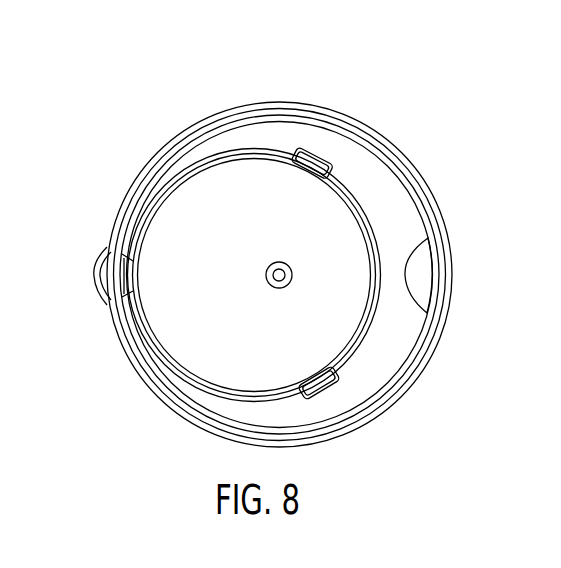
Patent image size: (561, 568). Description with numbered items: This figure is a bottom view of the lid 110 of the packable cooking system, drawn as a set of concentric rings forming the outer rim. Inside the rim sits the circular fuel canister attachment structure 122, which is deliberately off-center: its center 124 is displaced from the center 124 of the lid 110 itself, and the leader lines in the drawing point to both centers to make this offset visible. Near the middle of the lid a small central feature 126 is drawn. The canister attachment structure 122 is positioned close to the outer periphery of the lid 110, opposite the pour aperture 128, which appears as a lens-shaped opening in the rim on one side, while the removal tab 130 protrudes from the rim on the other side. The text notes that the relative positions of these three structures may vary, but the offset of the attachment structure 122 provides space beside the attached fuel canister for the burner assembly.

The lid 110 is at (442, 126).
The canister attachment structure 122 is at (367, 222).
The center 124 is at (253, 275).
The center boss / vent 126 is at (291, 285).
The pour aperture 128 is at (436, 267).
The removal tab 130 is at (95, 277).